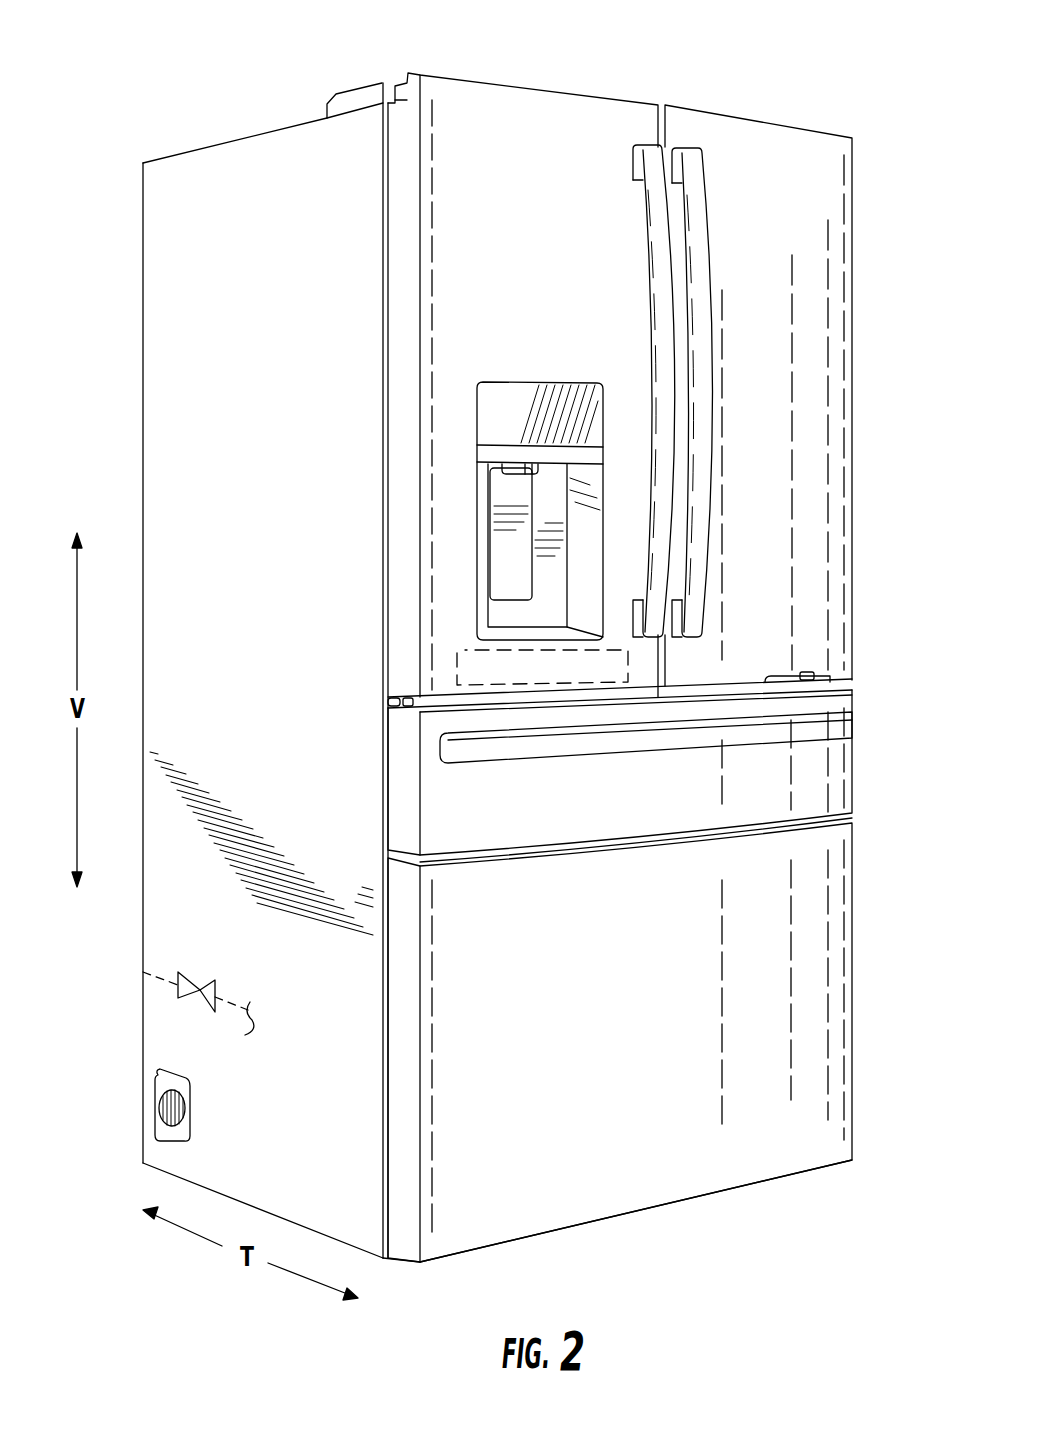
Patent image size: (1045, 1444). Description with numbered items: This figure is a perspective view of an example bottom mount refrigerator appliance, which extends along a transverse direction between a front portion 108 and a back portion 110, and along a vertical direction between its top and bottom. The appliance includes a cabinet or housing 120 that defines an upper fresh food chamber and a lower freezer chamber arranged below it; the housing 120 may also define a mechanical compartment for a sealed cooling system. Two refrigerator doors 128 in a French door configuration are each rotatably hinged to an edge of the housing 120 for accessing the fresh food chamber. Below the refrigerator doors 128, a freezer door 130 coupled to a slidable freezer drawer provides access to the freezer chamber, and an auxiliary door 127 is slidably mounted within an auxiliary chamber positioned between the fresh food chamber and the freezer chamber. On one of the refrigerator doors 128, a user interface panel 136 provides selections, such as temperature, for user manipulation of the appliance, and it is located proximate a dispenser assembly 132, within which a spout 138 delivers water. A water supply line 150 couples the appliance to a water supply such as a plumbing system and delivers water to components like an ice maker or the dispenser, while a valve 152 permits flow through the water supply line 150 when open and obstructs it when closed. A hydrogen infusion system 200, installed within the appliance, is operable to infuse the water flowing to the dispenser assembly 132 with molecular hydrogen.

The front portion 108 is at (668, 1210).
The back portion 110 is at (138, 1044).
The cabinet or housing 120 is at (170, 228).
The auxiliary door 127 is at (836, 770).
The refrigerator doors 128 is at (497, 113).
The freezer door 130 is at (835, 965).
The dispenser assembly 132 is at (480, 548).
The user interface panel 136 is at (517, 395).
The spout 138 is at (516, 464).
The water supply line 150 is at (165, 972).
The valve 152 is at (210, 988).
The hydrogen infusion system 200 is at (457, 662).